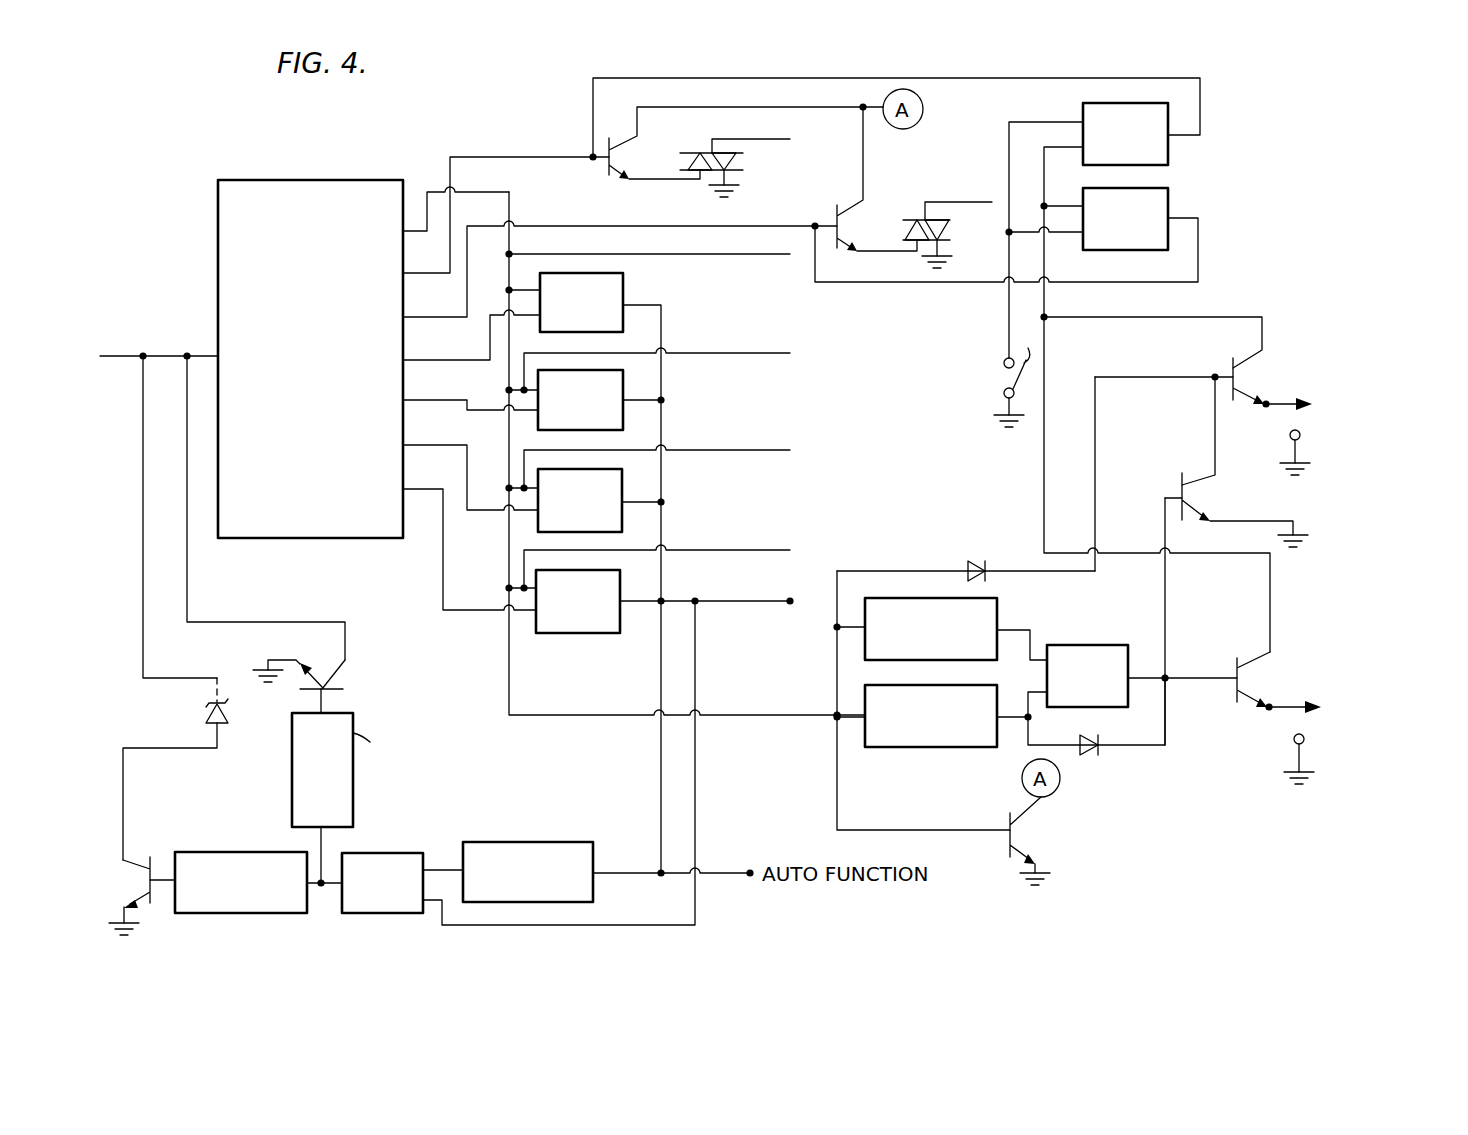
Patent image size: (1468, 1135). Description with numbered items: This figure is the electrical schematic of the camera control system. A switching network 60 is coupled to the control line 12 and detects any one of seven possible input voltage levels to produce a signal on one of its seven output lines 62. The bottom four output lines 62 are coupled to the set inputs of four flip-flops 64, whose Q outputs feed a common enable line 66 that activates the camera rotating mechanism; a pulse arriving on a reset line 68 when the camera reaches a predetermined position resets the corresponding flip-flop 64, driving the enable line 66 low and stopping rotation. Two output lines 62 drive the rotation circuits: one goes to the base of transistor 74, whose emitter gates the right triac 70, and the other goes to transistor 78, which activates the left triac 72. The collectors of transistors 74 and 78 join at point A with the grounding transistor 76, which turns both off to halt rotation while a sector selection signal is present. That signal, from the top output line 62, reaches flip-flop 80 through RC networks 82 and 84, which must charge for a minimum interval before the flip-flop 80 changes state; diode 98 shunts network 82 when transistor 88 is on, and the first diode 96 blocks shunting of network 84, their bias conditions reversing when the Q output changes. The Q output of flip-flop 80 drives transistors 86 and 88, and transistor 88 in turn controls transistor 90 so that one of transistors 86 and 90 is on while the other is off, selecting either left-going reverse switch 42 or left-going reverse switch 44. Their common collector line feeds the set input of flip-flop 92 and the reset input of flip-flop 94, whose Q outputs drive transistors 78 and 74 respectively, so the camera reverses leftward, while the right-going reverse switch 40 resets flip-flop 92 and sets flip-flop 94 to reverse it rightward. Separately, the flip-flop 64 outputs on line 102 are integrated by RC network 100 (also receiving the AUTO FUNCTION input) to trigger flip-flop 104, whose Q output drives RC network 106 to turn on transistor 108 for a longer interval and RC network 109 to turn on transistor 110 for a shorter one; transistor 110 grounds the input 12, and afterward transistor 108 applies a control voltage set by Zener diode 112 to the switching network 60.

The control line 12 is at (166, 355).
The right-going reverse switch 40 is at (948, 375).
The left-going reverse switch 42 is at (1293, 743).
The left-going reverse switch 44 is at (1290, 437).
The switching network 60 is at (218, 236).
The output lines 62 is at (450, 178).
The flip-flops 64 is at (591, 307).
The enable line 66 is at (760, 606).
The reset line 68 is at (790, 256).
The right triac 70 is at (735, 157).
The left triac 72 is at (940, 225).
The transistor 74 is at (606, 171).
The grounding transistor 76 is at (1008, 845).
The transistor 78 is at (836, 217).
The flip-flop 80 is at (1093, 648).
The RC network 82 is at (997, 614).
The RC network 84 is at (997, 703).
The transistor 86 is at (1232, 702).
The transistor 88 is at (1180, 485).
The transistor 90 is at (1232, 365).
The flip-flop 92 is at (1135, 224).
The flip-flop 94 is at (1135, 139).
The first diode 96 is at (1090, 756).
The diode 98 is at (972, 562).
The RC network 100 is at (503, 842).
The line 102 is at (659, 766).
The flip-flop 104 is at (383, 913).
The RC network 106 is at (235, 852).
The transistor 108 is at (158, 845).
The RC network 109 is at (295, 775).
The transistor 110 is at (342, 689).
The Zener diode 112 is at (204, 712).